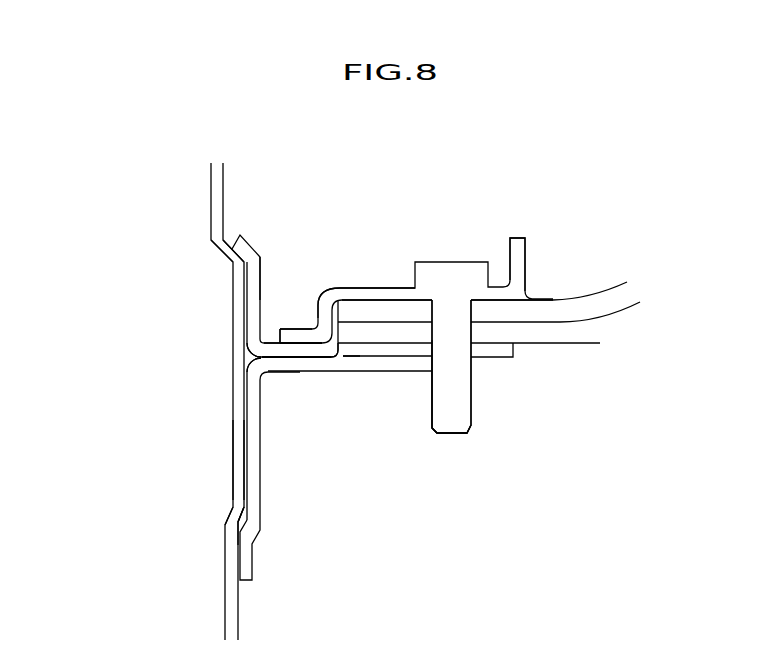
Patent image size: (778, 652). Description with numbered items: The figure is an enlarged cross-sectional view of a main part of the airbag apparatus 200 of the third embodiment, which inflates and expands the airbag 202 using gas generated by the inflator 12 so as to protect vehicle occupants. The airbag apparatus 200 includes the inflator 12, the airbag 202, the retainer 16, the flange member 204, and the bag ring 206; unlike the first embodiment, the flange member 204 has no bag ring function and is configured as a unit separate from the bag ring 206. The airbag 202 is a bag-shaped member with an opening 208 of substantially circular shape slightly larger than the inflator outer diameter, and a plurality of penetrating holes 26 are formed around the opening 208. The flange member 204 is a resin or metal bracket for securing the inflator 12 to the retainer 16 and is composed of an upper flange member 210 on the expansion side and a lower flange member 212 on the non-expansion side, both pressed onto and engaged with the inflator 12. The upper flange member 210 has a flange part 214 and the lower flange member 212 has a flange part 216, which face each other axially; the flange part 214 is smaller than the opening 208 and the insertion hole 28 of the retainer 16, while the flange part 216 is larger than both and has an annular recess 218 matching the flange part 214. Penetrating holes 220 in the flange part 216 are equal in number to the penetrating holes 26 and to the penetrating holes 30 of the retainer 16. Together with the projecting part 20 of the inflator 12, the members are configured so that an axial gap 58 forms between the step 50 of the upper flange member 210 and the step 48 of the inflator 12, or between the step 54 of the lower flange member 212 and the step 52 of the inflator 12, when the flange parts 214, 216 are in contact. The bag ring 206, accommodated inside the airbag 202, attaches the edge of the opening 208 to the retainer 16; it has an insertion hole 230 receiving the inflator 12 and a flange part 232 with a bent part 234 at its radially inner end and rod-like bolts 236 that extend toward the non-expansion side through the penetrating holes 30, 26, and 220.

The airbag apparatus 200 is at (306, 199).
The inflator 12 is at (231, 601).
The retainer 16 is at (551, 336).
The projecting part 20 is at (238, 465).
The penetrating holes 26 is at (442, 305).
The insertion hole 28 is at (336, 358).
The penetrating holes 30 is at (433, 332).
The step 48 is at (219, 258).
The step 50 is at (249, 246).
The step 52 is at (236, 517).
The step 54 is at (254, 544).
The gap 58 is at (237, 532).
The airbag 202 is at (590, 293).
The flange member 204 is at (108, 314).
The bag ring 206 is at (526, 262).
The opening 208 is at (339, 294).
The upper flange member 210 is at (255, 305).
The lower flange member 212 is at (255, 410).
The flange part 214 is at (288, 350).
The flange part 216 is at (390, 358).
The annular recess 218 is at (268, 352).
The penetrating holes 220 is at (434, 350).
The insertion hole 230 is at (280, 328).
The flange part 232 is at (384, 287).
The bent part 234 is at (312, 304).
The bolts 236 is at (468, 436).